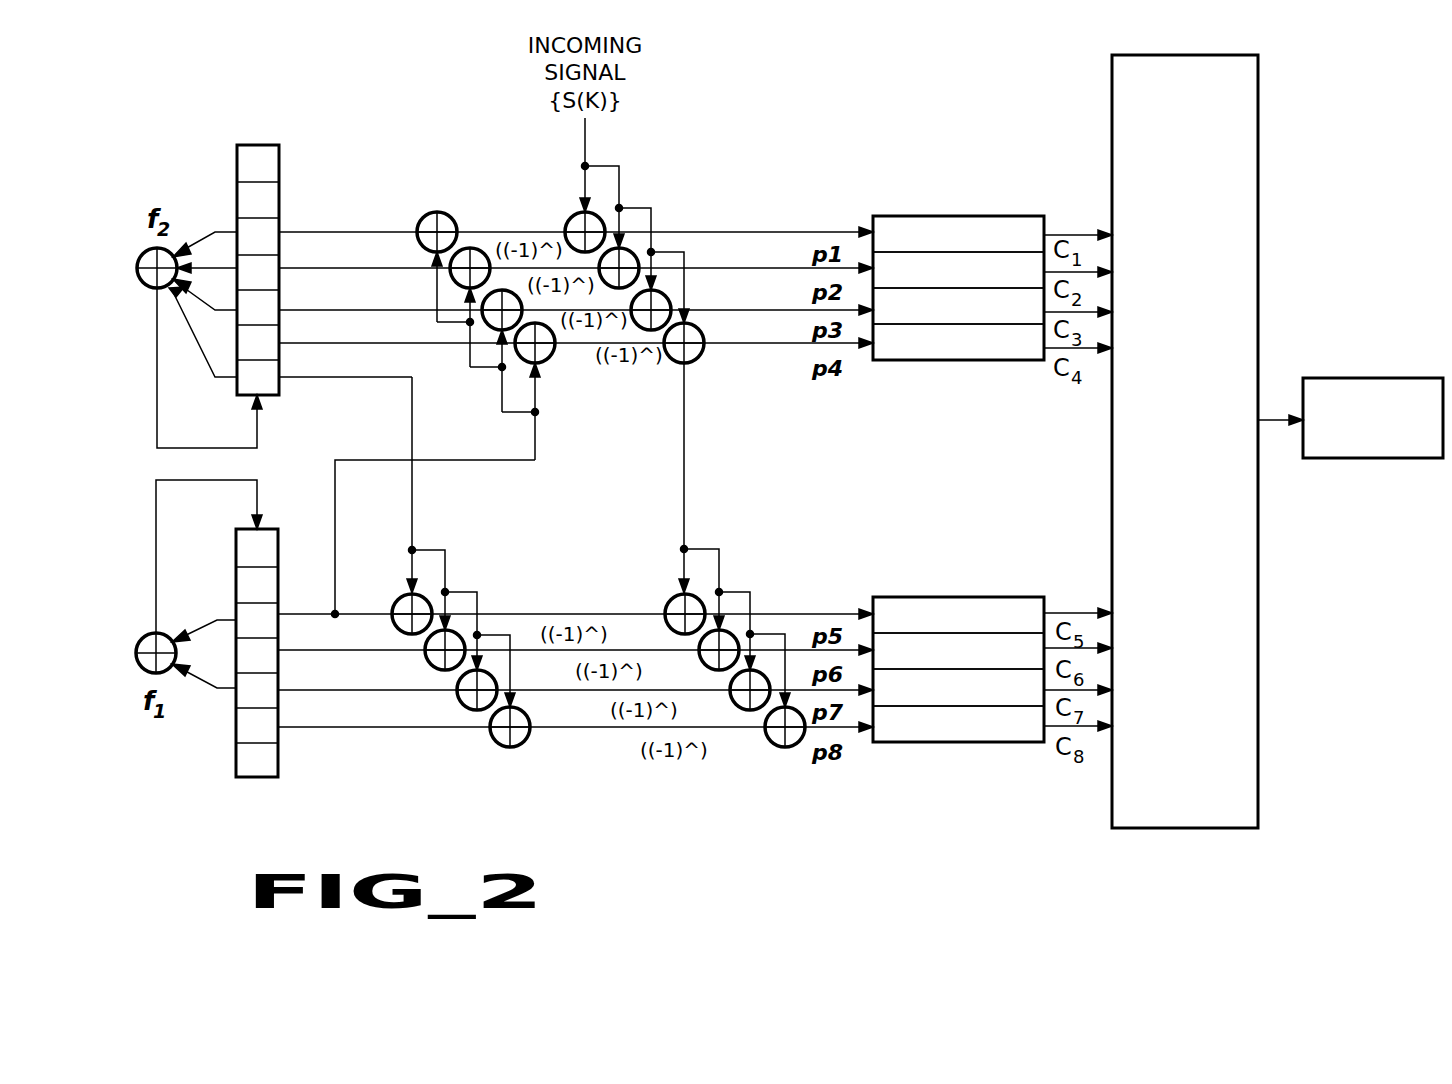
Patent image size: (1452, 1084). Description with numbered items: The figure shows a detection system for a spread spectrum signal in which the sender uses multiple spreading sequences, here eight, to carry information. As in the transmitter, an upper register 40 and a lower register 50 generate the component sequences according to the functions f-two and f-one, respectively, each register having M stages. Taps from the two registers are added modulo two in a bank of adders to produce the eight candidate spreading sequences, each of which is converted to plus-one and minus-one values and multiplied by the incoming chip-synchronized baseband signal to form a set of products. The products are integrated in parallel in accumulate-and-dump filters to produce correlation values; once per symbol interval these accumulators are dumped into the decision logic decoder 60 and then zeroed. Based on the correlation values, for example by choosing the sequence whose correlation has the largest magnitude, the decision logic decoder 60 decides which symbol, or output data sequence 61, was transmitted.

The upper register 40 is at (258, 146).
The lower register 50 is at (258, 778).
The decision logic decoder 60 is at (1106, 158).
The output data sequence 61 is at (1387, 377).